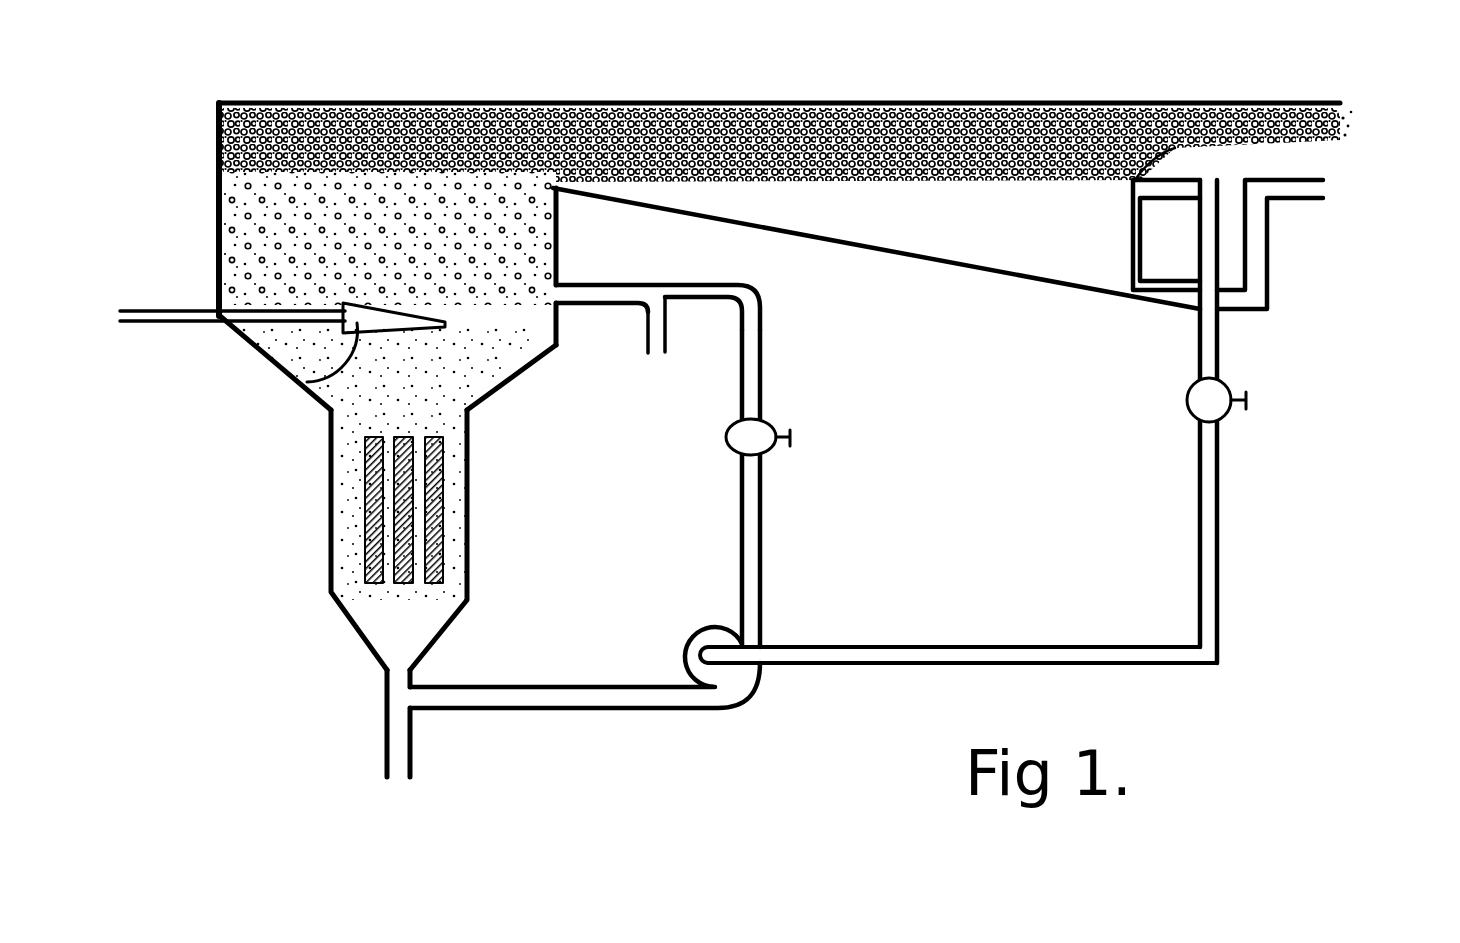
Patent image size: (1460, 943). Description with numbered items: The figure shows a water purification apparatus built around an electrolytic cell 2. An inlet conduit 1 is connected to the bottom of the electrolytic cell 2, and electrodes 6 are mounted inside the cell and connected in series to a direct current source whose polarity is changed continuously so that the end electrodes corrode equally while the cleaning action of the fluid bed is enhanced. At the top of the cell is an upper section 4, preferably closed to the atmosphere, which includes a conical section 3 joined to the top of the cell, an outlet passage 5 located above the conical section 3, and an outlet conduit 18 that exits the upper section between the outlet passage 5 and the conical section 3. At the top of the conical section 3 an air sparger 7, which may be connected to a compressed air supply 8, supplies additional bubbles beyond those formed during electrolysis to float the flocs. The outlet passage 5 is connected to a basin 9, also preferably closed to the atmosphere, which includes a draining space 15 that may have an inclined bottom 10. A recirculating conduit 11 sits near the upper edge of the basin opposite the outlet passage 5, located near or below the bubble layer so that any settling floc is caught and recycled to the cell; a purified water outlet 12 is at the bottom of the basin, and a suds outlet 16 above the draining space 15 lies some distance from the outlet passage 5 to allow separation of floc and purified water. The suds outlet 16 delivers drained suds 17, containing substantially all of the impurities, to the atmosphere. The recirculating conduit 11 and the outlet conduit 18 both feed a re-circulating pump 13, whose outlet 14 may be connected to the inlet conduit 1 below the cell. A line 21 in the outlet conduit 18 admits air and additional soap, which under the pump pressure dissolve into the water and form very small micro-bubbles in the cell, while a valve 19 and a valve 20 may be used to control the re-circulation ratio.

The inlet conduit 1 is at (410, 745).
The electrolytic cell 2 is at (470, 512).
The conical section 3 is at (527, 365).
The upper section 4 is at (560, 248).
The outlet passage 5 is at (563, 197).
The electrodes 6 is at (443, 470).
The air sparger 7 is at (297, 380).
The compressed air supply 8 is at (165, 323).
The basin 9 is at (983, 232).
The inclined bottom 10 is at (787, 238).
The recirculating conduit 11 is at (1220, 468).
The purified water outlet 12 is at (1268, 240).
The re-circulating pump 13 is at (762, 670).
The pump outlet 14 is at (600, 708).
The draining space 15 is at (790, 120).
The suds outlet 16 is at (1302, 150).
The drained suds 17 is at (1342, 118).
The outlet conduit 18 is at (760, 385).
The valve 19 is at (765, 452).
The valve 20 is at (1223, 378).
The line 21 is at (650, 313).